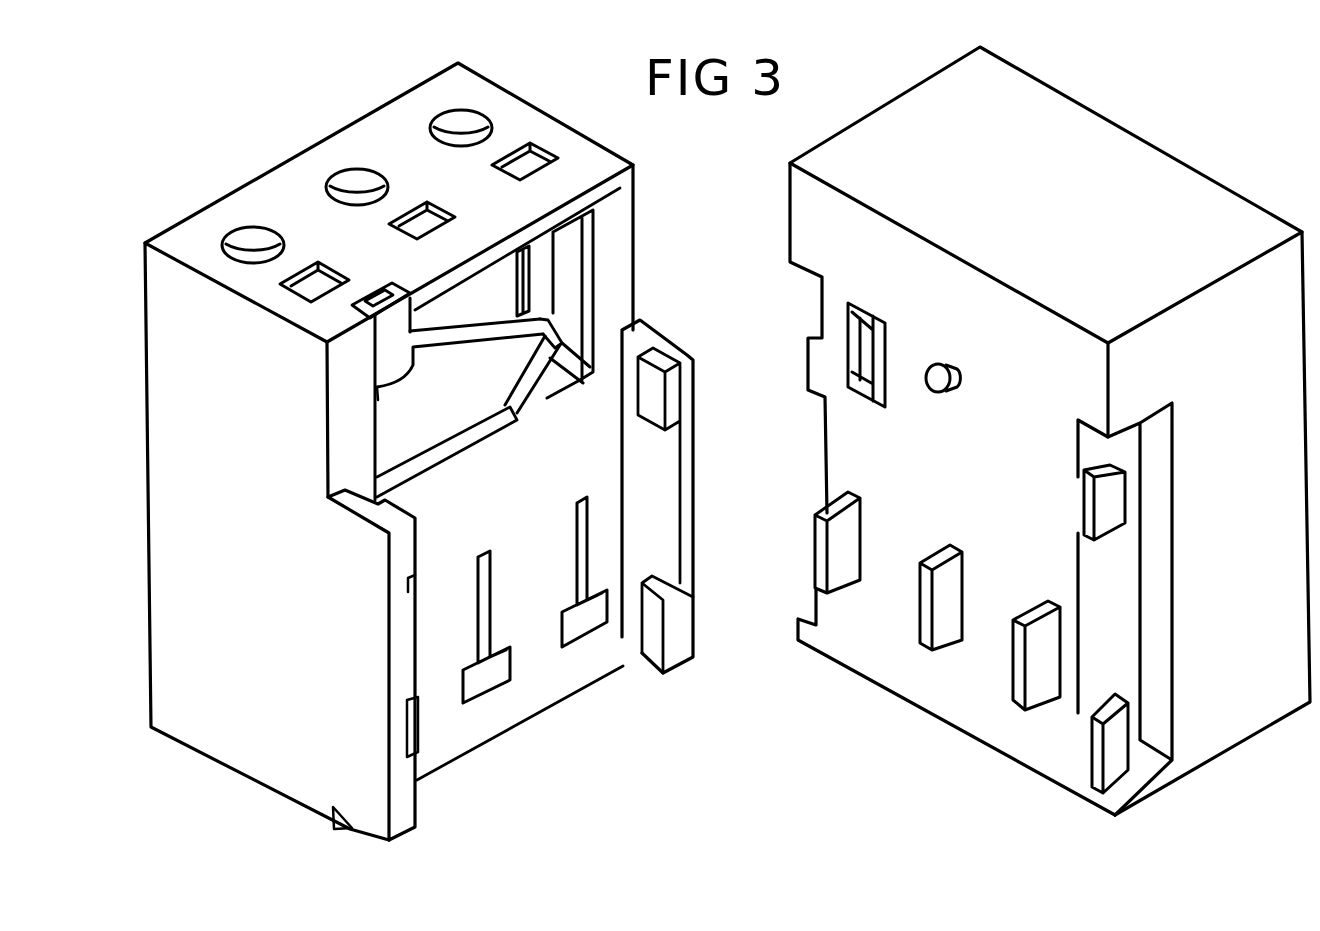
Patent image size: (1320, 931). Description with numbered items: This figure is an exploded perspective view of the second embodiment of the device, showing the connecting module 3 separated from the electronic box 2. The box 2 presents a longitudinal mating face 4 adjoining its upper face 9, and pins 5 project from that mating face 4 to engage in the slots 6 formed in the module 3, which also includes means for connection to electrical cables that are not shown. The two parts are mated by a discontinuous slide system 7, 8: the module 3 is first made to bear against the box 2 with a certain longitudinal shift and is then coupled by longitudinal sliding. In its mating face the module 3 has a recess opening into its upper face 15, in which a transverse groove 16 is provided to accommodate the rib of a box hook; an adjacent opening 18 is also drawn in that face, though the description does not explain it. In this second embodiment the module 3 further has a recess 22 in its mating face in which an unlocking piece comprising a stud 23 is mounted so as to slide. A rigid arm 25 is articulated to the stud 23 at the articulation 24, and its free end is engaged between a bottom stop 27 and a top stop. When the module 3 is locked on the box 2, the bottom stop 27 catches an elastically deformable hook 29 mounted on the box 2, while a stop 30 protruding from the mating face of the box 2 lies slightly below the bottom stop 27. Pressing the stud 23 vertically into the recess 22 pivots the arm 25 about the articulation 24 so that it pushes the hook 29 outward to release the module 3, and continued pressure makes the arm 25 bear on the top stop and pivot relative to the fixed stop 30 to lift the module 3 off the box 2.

The electronic box 2 is at (875, 99).
The connecting module 3 is at (553, 103).
The longitudinal mating face 4 is at (897, 643).
The pins 5 is at (1037, 673).
The slots 6 is at (583, 580).
The slide system 7 is at (670, 538).
The slide system 8 is at (1117, 750).
The upper face 9 is at (855, 147).
The upper face 15 is at (590, 168).
The transverse groove 16 is at (550, 313).
The opening 18 is at (543, 283).
The recess 22 is at (392, 438).
The stud 23 is at (372, 297).
The articulation 24 is at (378, 388).
The rigid arm 25 is at (488, 345).
The bottom stop 27 is at (550, 355).
The elastically deformable hook 29 is at (850, 353).
The stop 30 is at (958, 382).